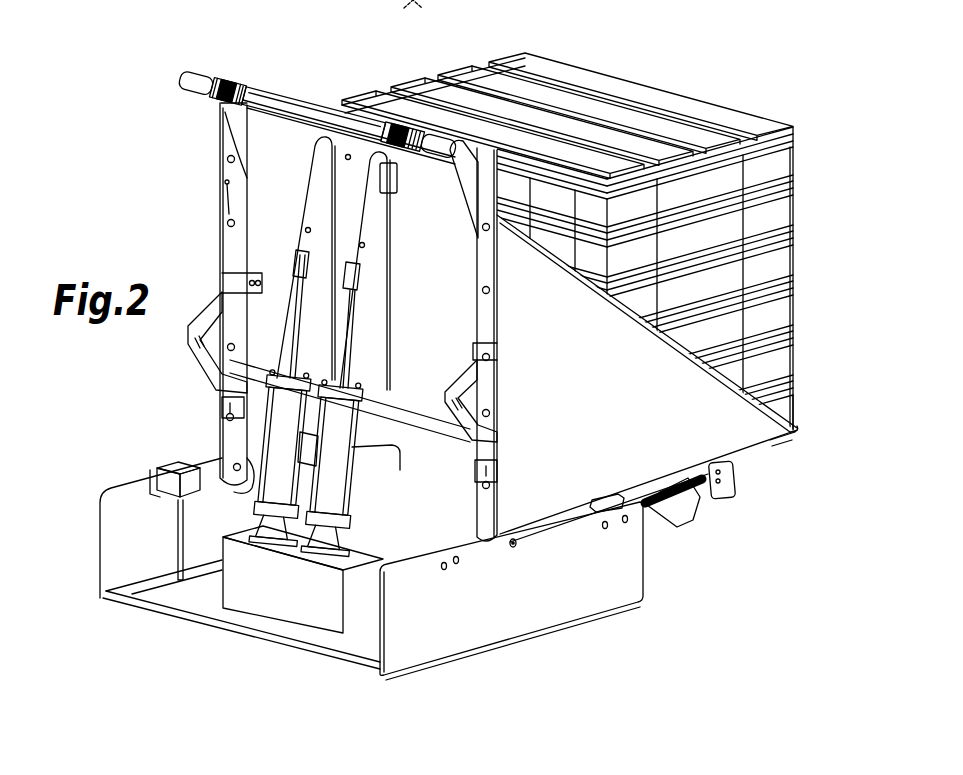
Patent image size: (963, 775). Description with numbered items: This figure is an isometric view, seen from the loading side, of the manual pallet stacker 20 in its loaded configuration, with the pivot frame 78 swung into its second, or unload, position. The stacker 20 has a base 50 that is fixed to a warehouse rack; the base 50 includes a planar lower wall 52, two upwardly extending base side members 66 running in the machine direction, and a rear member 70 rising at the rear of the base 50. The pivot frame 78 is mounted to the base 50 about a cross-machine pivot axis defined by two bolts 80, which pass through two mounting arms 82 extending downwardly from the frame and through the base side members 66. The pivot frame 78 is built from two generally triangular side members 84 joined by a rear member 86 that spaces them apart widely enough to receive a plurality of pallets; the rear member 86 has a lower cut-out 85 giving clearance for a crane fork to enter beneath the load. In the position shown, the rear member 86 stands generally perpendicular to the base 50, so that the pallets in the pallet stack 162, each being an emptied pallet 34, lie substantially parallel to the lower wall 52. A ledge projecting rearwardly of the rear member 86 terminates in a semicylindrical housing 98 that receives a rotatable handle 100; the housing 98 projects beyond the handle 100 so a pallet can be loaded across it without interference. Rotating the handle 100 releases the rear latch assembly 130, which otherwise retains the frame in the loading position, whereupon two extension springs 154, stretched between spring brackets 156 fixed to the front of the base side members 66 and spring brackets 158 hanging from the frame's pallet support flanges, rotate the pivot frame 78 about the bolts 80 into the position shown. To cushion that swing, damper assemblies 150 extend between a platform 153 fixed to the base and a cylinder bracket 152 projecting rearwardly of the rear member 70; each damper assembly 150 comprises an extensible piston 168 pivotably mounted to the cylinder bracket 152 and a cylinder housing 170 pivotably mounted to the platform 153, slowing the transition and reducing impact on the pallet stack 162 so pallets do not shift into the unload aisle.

The manual pallet stacker 20 is at (325, 81).
The semicylindrical housing 98 is at (278, 84).
The rotatable handle 100 is at (229, 70).
The rear member 70 is at (400, 5).
The pallet stack 162 is at (697, 88).
The pallet 34 is at (783, 398).
The cylinder bracket 152 is at (368, 195).
The extensible piston 168 is at (352, 312).
The rear member 86 is at (430, 387).
The side member 84 is at (636, 317).
The pivot frame 78 is at (777, 443).
The spring bracket 158 is at (752, 478).
The extension spring 154 is at (680, 483).
The spring bracket 156 is at (623, 496).
The mounting arm 82 is at (220, 442).
The bolt 80 is at (248, 470).
The base side member 66 is at (98, 547).
The base 50 is at (450, 344).
The lower wall 52 is at (147, 590).
The rear latch assembly 130 is at (163, 463).
The damper assembly 150 is at (254, 498).
The platform 153 is at (227, 580).
The cylinder housing 170 is at (350, 467).
The lower cut-out 85 is at (447, 467).